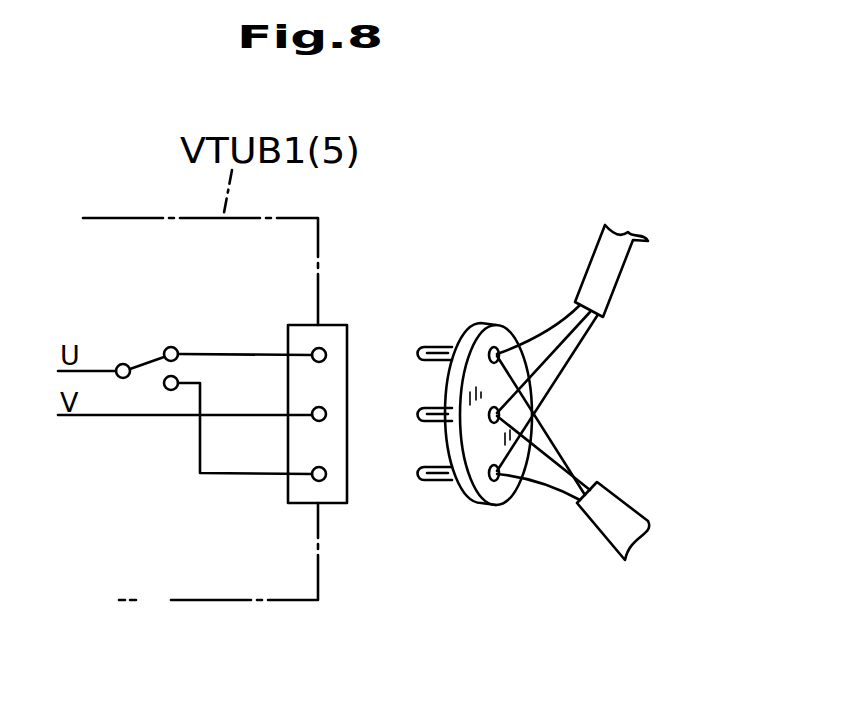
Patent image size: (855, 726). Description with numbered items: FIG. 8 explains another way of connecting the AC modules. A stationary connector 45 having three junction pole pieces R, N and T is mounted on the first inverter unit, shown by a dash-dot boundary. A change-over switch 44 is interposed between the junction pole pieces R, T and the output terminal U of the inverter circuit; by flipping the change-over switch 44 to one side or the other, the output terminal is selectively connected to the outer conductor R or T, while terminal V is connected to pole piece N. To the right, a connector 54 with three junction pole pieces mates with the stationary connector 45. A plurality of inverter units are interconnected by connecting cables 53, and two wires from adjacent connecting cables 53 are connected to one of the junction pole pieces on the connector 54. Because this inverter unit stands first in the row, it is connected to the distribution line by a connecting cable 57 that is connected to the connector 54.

The change-over switch 44 is at (147, 358).
The stationary connector 45 is at (335, 335).
The connecting cable 53 is at (617, 513).
The connector 54 is at (478, 328).
The connecting cable 57 is at (622, 270).